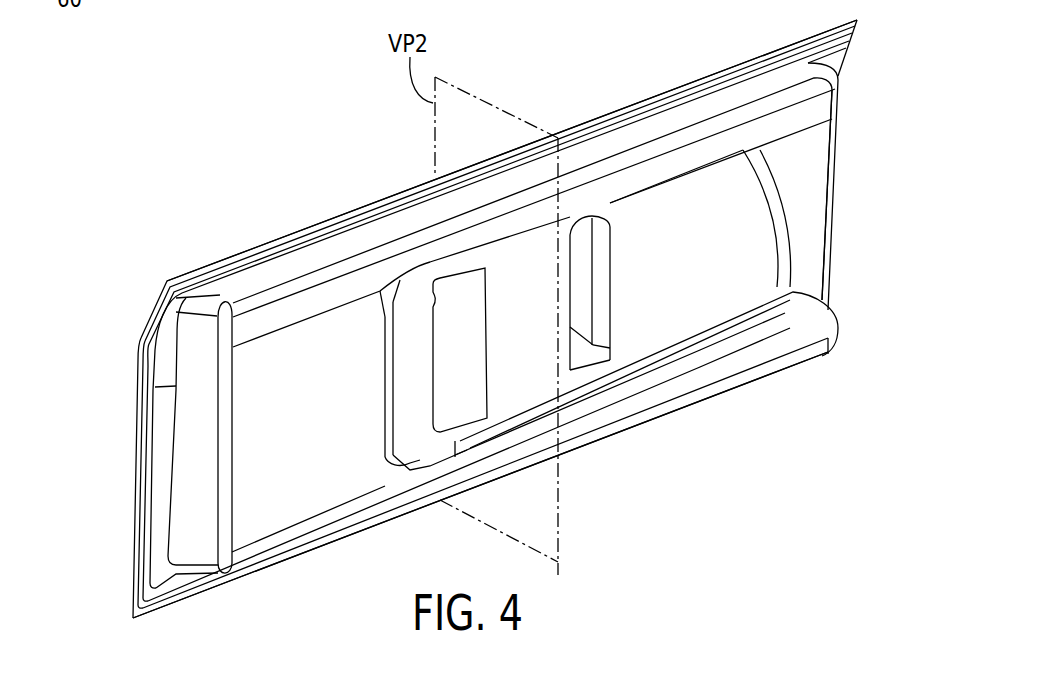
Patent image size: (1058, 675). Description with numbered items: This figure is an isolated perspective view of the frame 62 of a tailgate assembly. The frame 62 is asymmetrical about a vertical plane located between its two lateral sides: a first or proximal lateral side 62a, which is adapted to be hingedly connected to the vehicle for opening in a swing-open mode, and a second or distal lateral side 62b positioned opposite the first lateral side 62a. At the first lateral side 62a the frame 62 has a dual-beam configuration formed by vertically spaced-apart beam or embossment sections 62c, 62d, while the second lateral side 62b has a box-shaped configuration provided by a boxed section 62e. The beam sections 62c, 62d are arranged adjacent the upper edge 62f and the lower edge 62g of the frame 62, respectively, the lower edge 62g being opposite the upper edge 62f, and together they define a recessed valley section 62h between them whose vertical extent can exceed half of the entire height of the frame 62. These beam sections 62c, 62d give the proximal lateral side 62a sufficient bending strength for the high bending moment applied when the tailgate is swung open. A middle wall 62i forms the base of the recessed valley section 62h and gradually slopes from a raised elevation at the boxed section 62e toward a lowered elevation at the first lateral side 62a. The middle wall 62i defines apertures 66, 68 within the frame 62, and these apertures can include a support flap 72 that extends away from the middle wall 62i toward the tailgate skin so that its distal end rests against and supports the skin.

The frame 62 is at (375, 537).
The first lateral side 62a is at (803, 208).
The second lateral side 62b is at (181, 465).
The beam section 62c is at (688, 155).
The beam section 62d is at (733, 366).
The boxed section 62e is at (268, 480).
The upper edge 62f is at (312, 227).
The lower edge 62g is at (633, 433).
The recessed valley section 62h is at (737, 233).
The middle wall 62i is at (704, 262).
The aperture 66 is at (493, 370).
The aperture 68 is at (610, 340).
The support flap 72 is at (578, 247).